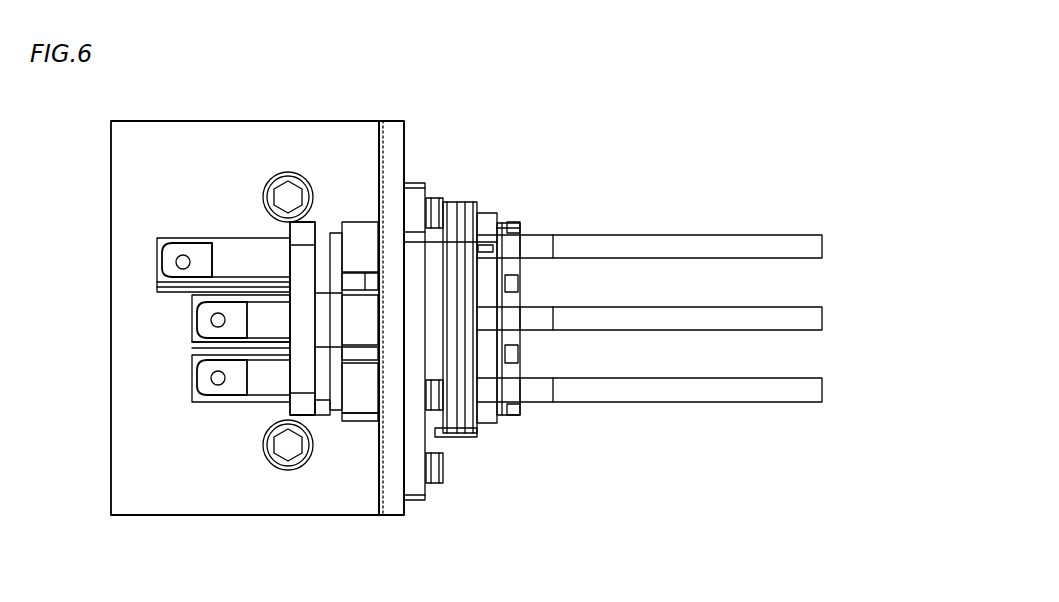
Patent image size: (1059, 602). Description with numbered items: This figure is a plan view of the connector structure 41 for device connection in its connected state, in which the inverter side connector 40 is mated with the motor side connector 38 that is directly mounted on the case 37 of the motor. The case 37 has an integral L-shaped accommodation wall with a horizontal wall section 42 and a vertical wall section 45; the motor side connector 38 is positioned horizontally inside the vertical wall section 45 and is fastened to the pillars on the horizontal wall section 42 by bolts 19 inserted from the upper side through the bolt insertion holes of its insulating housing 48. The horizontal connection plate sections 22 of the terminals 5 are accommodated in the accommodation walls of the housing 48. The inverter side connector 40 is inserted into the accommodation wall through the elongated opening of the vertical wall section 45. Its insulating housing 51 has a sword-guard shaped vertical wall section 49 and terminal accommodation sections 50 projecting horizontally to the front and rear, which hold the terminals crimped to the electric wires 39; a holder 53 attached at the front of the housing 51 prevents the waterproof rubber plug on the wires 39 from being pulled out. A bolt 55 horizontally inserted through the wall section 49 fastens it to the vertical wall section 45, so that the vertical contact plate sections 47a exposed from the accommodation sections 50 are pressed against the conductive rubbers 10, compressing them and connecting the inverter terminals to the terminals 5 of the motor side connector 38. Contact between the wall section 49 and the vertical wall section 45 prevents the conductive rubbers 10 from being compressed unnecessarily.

The terminals 5 is at (196, 375).
The conductive rubbers 10 is at (358, 268).
The bolts 19 is at (291, 444).
The connection plate sections 22 is at (202, 255).
The case 37 is at (361, 121).
The motor side connector 38 is at (253, 417).
The electric wires 39 is at (603, 400).
The inverter side connector 40 is at (462, 449).
The connector structure for device connection 41 is at (538, 120).
The horizontal wall section 42 is at (275, 135).
The vertical wall section 45 is at (405, 152).
The contact plate sections 47a is at (318, 234).
The insulating housing 48 is at (253, 223).
The vertical wall section 49 is at (416, 484).
The terminal accommodation sections 50 is at (403, 421).
The insulating housing 51 is at (425, 192).
The holder 53 is at (503, 416).
The bolt 55 is at (437, 485).